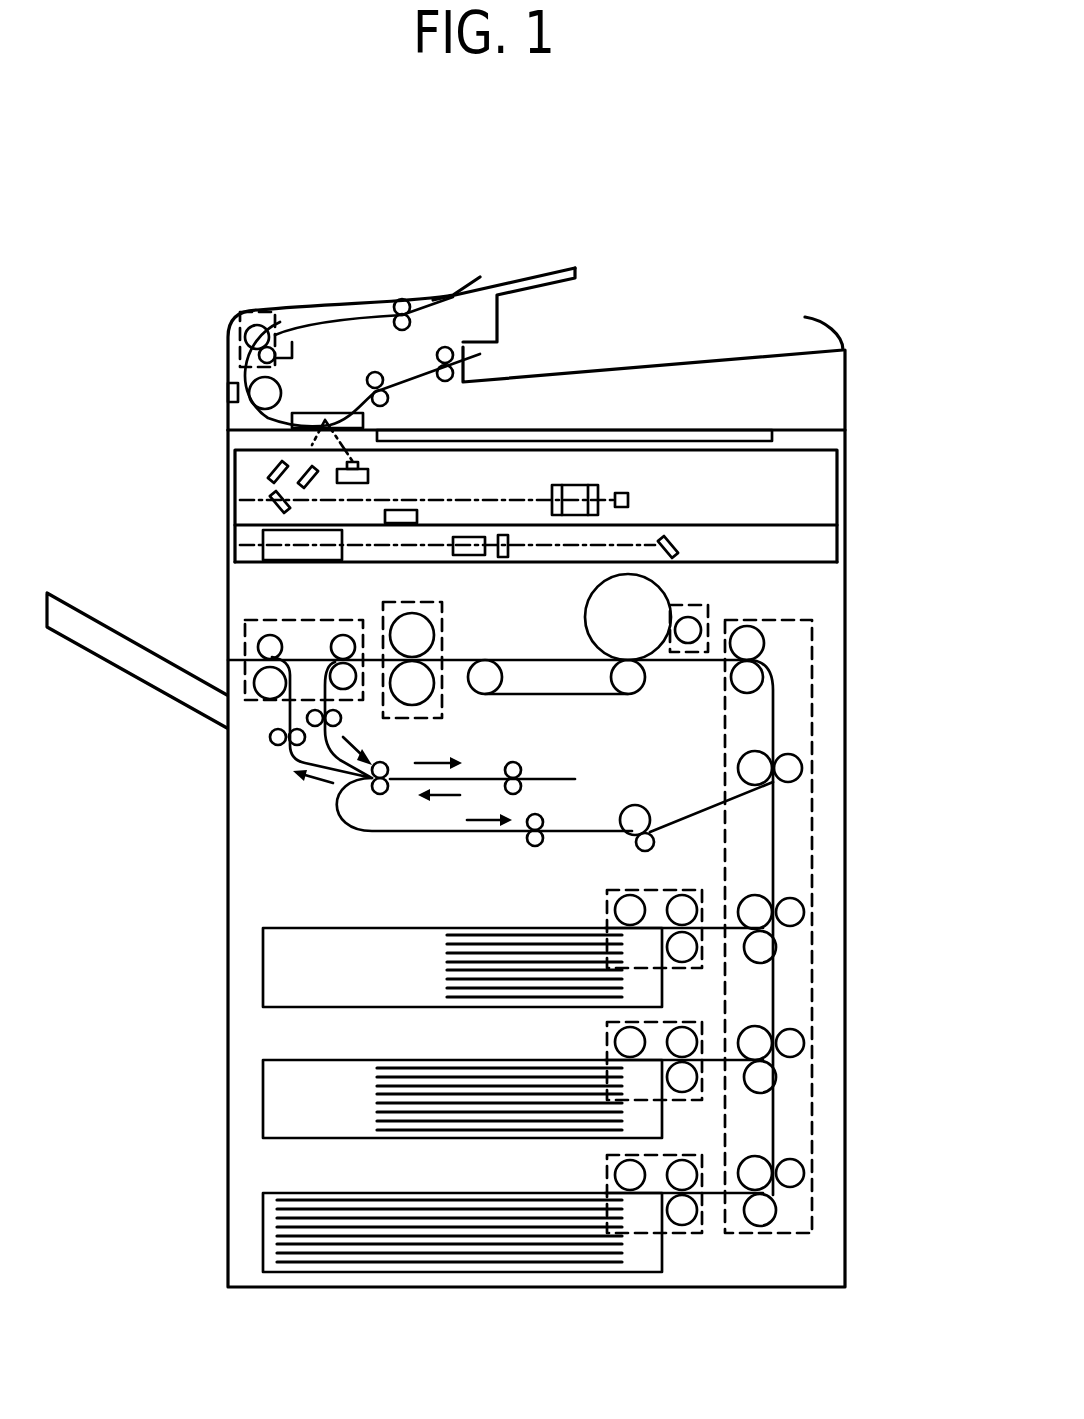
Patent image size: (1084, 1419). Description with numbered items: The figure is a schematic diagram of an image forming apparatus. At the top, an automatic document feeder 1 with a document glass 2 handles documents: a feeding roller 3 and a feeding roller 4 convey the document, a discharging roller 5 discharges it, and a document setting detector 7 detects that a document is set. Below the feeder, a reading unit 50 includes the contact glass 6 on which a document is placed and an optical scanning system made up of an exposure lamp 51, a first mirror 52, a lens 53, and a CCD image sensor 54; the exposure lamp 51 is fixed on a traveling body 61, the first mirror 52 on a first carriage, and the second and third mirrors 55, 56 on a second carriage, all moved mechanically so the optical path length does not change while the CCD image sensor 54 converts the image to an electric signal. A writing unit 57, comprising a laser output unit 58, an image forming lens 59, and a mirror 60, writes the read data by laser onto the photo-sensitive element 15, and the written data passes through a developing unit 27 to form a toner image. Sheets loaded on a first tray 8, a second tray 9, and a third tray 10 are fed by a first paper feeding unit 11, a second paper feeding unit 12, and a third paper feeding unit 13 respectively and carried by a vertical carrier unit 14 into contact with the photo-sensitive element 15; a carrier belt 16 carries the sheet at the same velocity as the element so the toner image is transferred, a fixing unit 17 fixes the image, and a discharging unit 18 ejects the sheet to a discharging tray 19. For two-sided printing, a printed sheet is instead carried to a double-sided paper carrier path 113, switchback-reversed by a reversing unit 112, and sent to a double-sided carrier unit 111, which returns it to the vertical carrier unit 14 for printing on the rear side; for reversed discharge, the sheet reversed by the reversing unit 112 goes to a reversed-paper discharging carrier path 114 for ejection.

The automatic document feeder 1 is at (845, 385).
The document glass 2 is at (530, 280).
The feeding roller 3 is at (258, 308).
The feeding roller 4 is at (388, 398).
The discharging roller 5 is at (447, 347).
The contact glass 6 is at (773, 437).
The document setting detector 7 is at (297, 350).
The first tray 8 is at (285, 1007).
The second tray 9 is at (285, 1138).
The third tray 10 is at (285, 1272).
The first paper feeding unit 11 is at (700, 945).
The second paper feeding unit 12 is at (700, 1077).
The third paper feeding unit 13 is at (700, 1208).
The vertical carrier unit 14 is at (812, 700).
The photo-sensitive element 15 is at (586, 610).
The carrier belt 16 is at (645, 683).
The fixing unit 17 is at (443, 618).
The discharging unit 18 is at (273, 621).
The discharging tray 19 is at (155, 652).
The developing unit 27 is at (708, 615).
The reading unit 50 is at (830, 485).
The exposure lamp 51 is at (358, 464).
The first mirror 52 is at (313, 486).
The lens 53 is at (598, 490).
The CCD image sensor 54 is at (628, 500).
The second mirror 55 is at (270, 462).
The third mirror 56 is at (271, 500).
The writing unit 57 is at (822, 548).
The laser output unit 58 is at (263, 547).
The image forming lens 59 is at (500, 535).
The mirror 60 is at (678, 540).
The traveling body 61 is at (360, 483).
The double-sided carrier unit 111 is at (440, 845).
The reversing unit 112 is at (472, 762).
The double-sided paper carrier path 113 is at (353, 733).
The reversed-paper discharging carrier path 114 is at (270, 727).